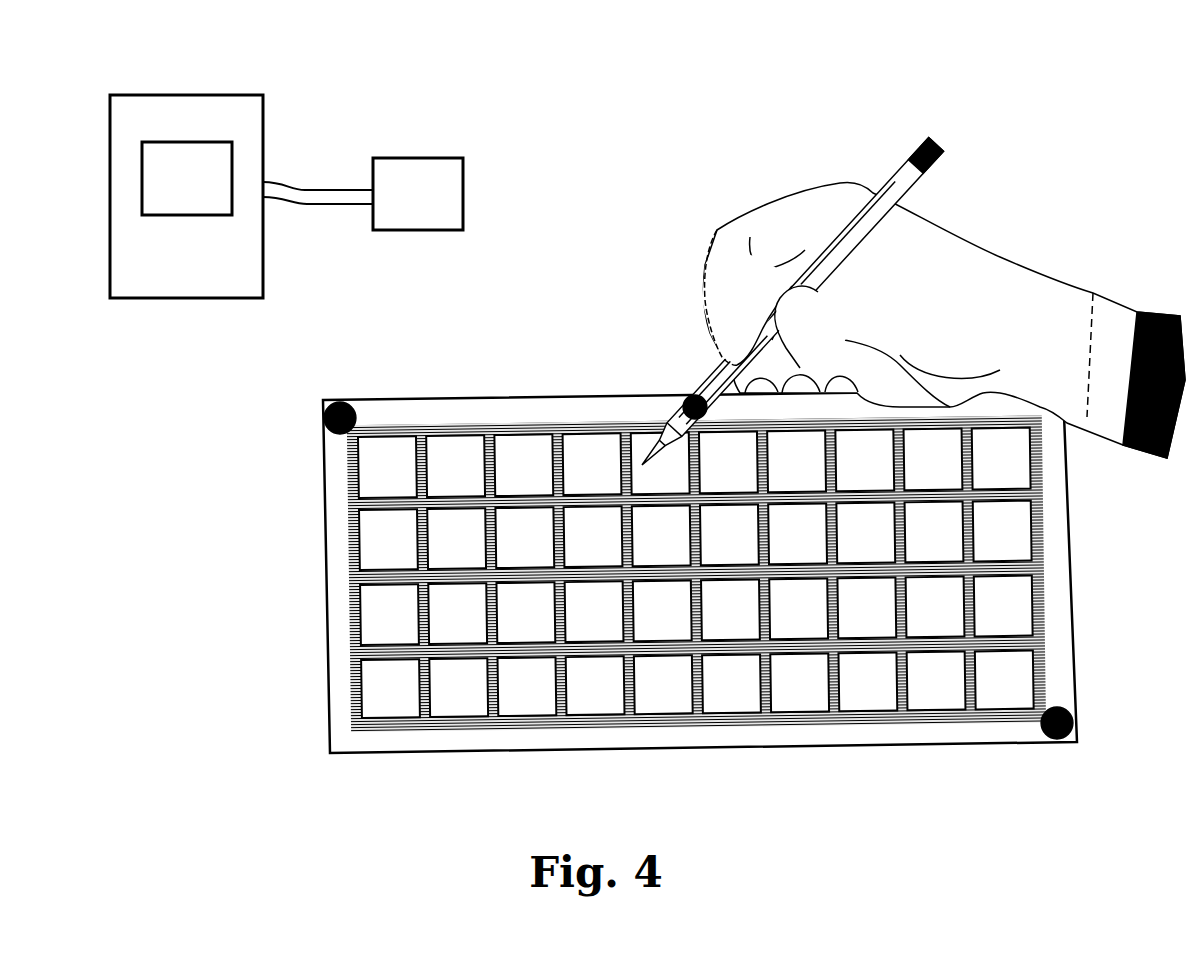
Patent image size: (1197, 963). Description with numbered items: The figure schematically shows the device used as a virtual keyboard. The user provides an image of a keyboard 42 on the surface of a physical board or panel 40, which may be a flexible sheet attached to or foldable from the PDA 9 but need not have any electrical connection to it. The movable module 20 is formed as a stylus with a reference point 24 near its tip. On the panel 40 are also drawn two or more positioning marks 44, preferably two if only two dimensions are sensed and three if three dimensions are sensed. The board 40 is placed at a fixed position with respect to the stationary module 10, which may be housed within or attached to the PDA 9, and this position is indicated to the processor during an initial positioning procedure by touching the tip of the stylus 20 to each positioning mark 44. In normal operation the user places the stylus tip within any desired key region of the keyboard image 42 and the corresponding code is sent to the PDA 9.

The PDA 9 is at (187, 95).
The stationary module 10 is at (420, 158).
The movable module 20 is at (917, 145).
The reference point 24 is at (685, 397).
The panel 40 is at (330, 697).
The image of a keyboard 42 is at (360, 577).
The positioning marks 44 is at (325, 410).